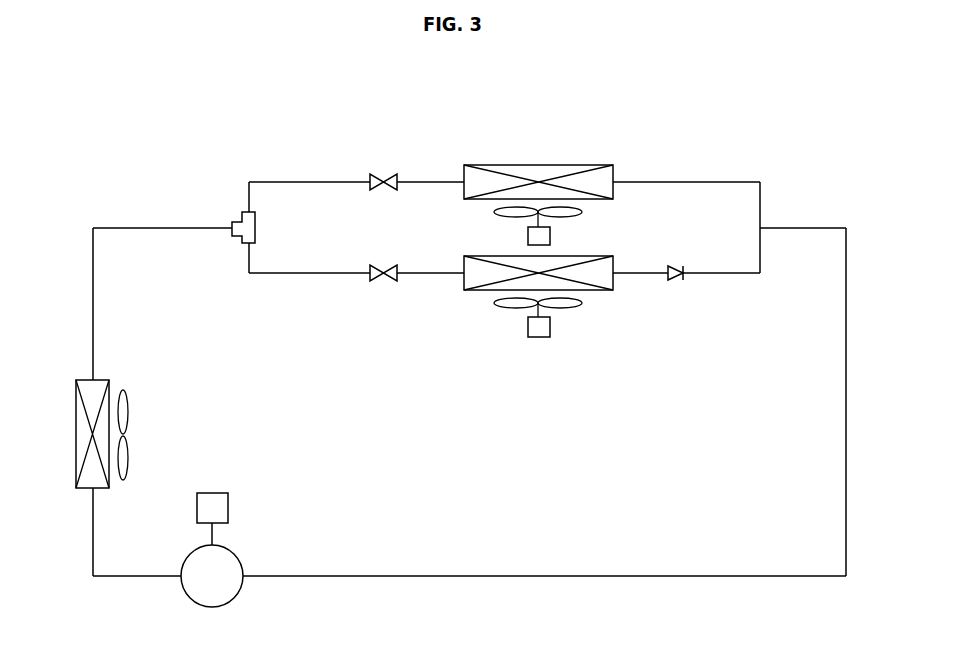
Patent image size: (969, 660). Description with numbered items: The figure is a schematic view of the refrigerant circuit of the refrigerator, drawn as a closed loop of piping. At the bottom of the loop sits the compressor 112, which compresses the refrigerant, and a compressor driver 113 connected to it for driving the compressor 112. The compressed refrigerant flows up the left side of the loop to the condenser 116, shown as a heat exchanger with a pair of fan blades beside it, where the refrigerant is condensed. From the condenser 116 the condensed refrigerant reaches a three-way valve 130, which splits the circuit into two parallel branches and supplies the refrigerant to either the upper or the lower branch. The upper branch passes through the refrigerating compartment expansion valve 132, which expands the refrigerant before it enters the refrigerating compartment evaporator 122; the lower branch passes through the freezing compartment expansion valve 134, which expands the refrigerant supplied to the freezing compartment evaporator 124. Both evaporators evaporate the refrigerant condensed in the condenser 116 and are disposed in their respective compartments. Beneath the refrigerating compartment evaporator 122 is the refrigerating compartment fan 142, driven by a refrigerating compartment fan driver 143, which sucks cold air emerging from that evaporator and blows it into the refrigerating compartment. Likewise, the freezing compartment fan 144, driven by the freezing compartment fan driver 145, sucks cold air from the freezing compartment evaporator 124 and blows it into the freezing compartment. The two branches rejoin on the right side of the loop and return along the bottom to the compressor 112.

The compressor 112 is at (236, 598).
The compressor driver 113 is at (230, 505).
The condenser 116 is at (76, 413).
The refrigerating compartment evaporator 122 is at (558, 165).
The freezing compartment evaporator 124 is at (482, 292).
The 3-way valve 130 is at (232, 223).
The refrigerating compartment expansion valve 132 is at (383, 174).
The freezing compartment expansion valve 134 is at (383, 282).
The refrigerating compartment fan 142 is at (583, 212).
The refrigerating compartment fan driver 143 is at (528, 238).
The freezing compartment fan 144 is at (585, 303).
The freezing compartment fan driver 145 is at (550, 327).